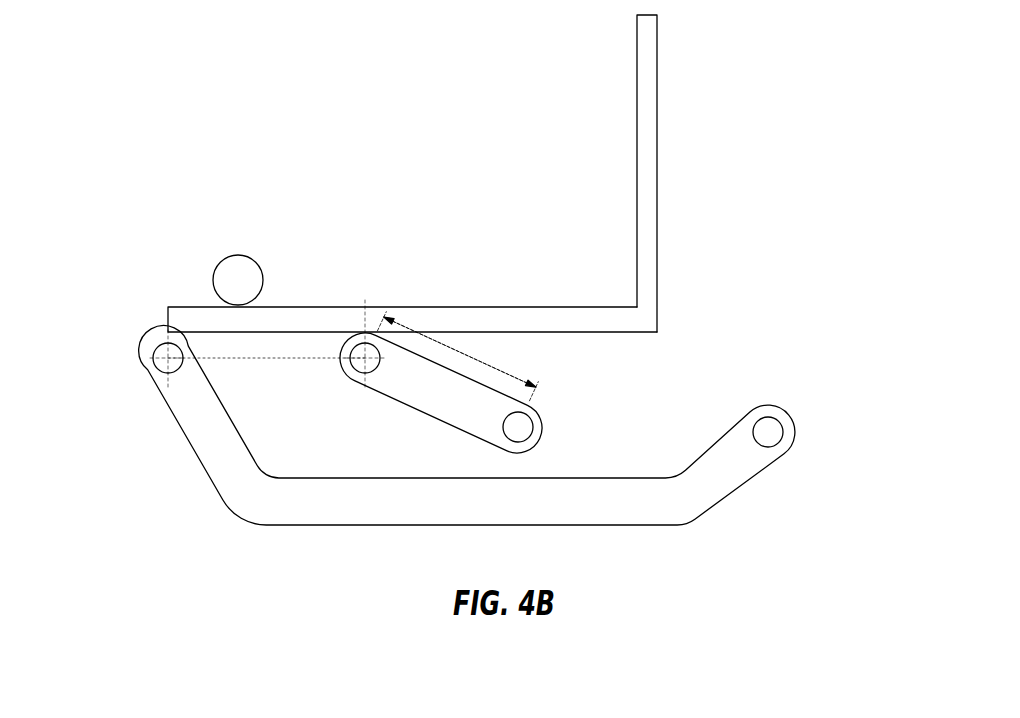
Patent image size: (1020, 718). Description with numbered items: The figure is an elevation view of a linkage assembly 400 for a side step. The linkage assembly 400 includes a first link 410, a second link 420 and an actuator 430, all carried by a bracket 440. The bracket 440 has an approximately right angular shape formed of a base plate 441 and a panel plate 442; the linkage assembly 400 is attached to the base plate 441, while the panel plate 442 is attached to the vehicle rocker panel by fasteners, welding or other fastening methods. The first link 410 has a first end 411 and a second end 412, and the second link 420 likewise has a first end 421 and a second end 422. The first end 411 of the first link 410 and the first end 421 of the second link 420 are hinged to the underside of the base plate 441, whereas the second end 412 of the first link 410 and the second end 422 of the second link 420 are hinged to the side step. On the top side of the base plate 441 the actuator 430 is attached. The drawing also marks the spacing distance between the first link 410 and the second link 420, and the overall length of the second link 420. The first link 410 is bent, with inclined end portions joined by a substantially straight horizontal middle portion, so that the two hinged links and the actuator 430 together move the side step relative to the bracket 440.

The linkage assembly 400 is at (319, 104).
The first link 410 is at (278, 530).
The first end of the first link 411 is at (143, 362).
The second end of the first link 412 is at (770, 407).
The second link 420 is at (411, 423).
The first end of the second link 421 is at (345, 370).
The second end of the second link 422 is at (515, 443).
The actuator 430 is at (245, 268).
The bracket 440 is at (669, 99).
The base plate 441 is at (498, 306).
The panel plate 442 is at (638, 83).